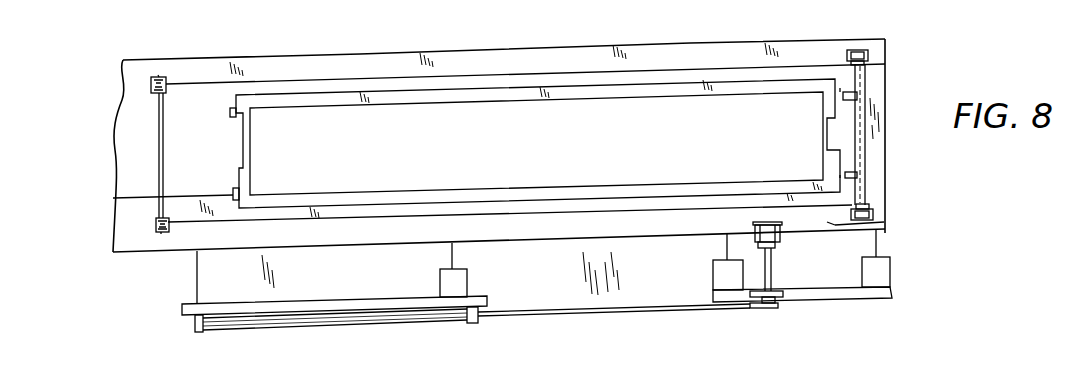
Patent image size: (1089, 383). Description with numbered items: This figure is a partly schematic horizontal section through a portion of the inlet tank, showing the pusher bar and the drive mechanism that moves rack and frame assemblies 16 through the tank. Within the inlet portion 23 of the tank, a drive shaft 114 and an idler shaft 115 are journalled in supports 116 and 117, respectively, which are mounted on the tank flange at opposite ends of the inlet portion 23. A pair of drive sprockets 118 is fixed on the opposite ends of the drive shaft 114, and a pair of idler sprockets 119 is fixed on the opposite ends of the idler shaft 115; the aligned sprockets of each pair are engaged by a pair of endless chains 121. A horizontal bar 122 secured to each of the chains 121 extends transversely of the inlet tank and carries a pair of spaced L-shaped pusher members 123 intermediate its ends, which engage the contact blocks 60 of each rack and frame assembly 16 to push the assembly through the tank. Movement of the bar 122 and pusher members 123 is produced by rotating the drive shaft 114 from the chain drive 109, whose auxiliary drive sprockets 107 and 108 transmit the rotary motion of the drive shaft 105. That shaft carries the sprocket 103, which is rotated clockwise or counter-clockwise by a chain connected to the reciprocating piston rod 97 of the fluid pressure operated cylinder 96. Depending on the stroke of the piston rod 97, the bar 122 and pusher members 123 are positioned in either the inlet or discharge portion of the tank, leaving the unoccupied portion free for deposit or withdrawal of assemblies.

The rack and frame assembly 16 is at (297, 99).
The inlet portion 23 is at (540, 147).
The contact block 60 is at (840, 88).
The fluid pressure operated cylinder 96 is at (288, 323).
The piston rod 97 is at (542, 316).
The sprocket 103 is at (778, 308).
The drive shaft 105 is at (774, 264).
The auxiliary drive sprocket 107 is at (755, 224).
The auxiliary drive sprocket 108 is at (885, 226).
The chain drive 109 is at (831, 222).
The drive shaft 114 is at (865, 155).
The idler shaft 115 is at (164, 153).
The support 116 is at (866, 54).
The support 117 is at (158, 77).
The drive sprocket 118 is at (866, 64).
The idler sprocket 119 is at (166, 86).
The endless chain 121 is at (517, 73).
The horizontal bar 122 is at (858, 120).
The pusher member 123 is at (847, 96).